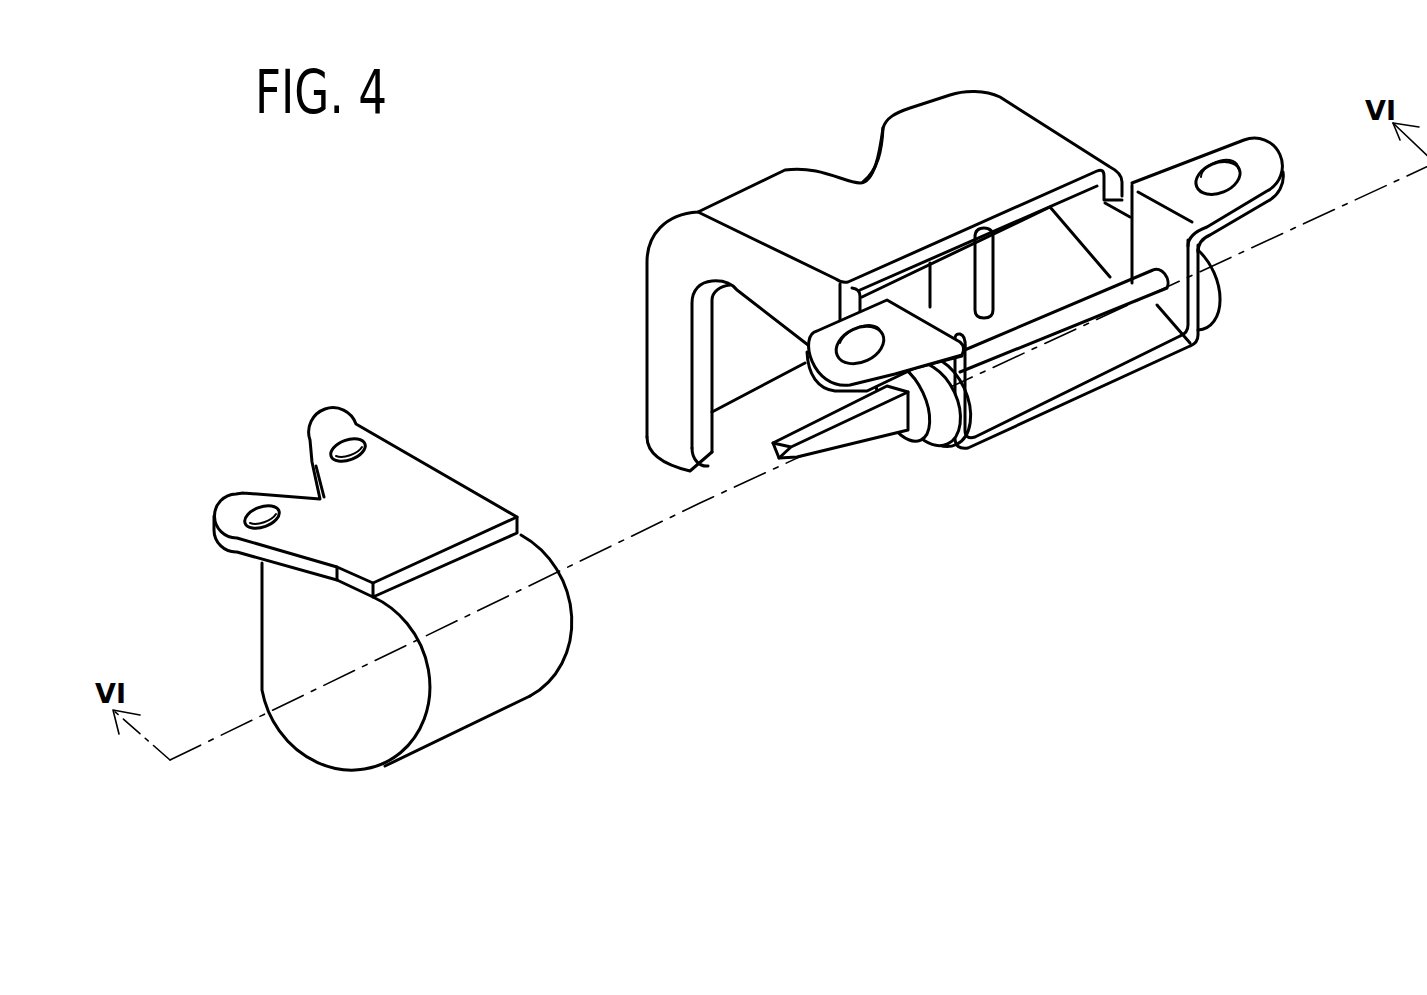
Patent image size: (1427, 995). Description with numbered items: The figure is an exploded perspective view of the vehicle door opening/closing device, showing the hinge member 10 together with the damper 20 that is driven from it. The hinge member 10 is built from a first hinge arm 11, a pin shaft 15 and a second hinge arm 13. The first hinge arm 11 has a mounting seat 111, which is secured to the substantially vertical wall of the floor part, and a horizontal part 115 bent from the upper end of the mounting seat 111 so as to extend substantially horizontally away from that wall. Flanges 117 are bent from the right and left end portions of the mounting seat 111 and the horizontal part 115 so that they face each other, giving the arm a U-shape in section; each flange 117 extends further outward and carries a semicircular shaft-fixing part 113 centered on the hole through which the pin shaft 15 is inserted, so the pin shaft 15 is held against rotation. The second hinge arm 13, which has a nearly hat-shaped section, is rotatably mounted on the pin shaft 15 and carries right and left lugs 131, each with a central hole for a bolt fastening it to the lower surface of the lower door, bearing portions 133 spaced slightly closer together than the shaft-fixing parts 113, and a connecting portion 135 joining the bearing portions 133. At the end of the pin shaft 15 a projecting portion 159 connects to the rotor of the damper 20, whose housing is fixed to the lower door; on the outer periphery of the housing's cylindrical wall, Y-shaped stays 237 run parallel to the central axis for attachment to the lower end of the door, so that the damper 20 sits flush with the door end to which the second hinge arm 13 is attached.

The hinge member 10 is at (1024, 69).
The first hinge arm 11 is at (740, 185).
The horizontal part 115 is at (953, 128).
The mounting seat 111 is at (648, 335).
The flanges 117 is at (713, 380).
The second hinge arm 13 is at (1076, 356).
The connecting portion 135 is at (1053, 408).
The lugs 131 is at (1172, 165).
The pin shaft 15 is at (1113, 320).
The bearing portions 133 is at (1078, 422).
The shaft-fixing part 113 is at (905, 447).
The projecting portion 159 is at (842, 462).
The stays 237 is at (228, 492).
The damper 20 is at (482, 738).